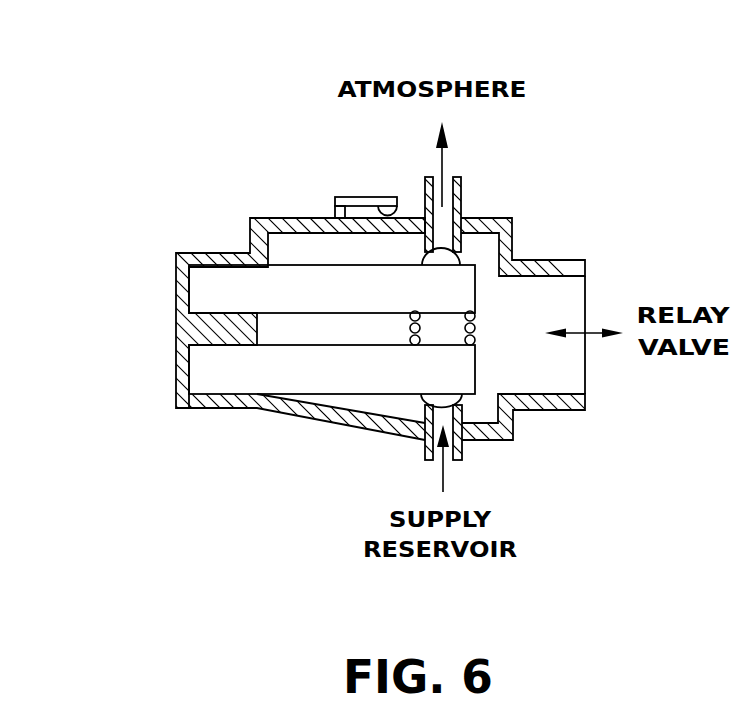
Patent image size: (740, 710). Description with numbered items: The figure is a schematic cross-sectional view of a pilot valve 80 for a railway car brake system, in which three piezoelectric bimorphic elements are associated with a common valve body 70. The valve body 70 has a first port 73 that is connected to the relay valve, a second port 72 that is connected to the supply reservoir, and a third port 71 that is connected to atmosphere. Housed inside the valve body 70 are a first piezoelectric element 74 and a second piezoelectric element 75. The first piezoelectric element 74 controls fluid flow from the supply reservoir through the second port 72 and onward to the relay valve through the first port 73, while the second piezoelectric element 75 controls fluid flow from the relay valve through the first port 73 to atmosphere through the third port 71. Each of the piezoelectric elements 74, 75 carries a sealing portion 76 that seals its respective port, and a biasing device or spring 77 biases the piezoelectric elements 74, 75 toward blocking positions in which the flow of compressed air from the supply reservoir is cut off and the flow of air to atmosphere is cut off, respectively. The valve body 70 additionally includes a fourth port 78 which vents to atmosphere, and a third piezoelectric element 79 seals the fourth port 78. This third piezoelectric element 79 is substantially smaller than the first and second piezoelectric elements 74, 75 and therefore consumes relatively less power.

The common valve body 70 is at (517, 432).
The third port 71 is at (462, 197).
The second port 72 is at (463, 452).
The first port 73 is at (547, 260).
The first piezoelectric element 74 is at (225, 383).
The second piezoelectric element 75 is at (213, 277).
The sealing portions 76 is at (458, 260).
The spring 77 is at (412, 325).
The fourth port 78 is at (366, 250).
The third piezoelectric element 79 is at (352, 197).
The pilot valve 80 is at (209, 123).